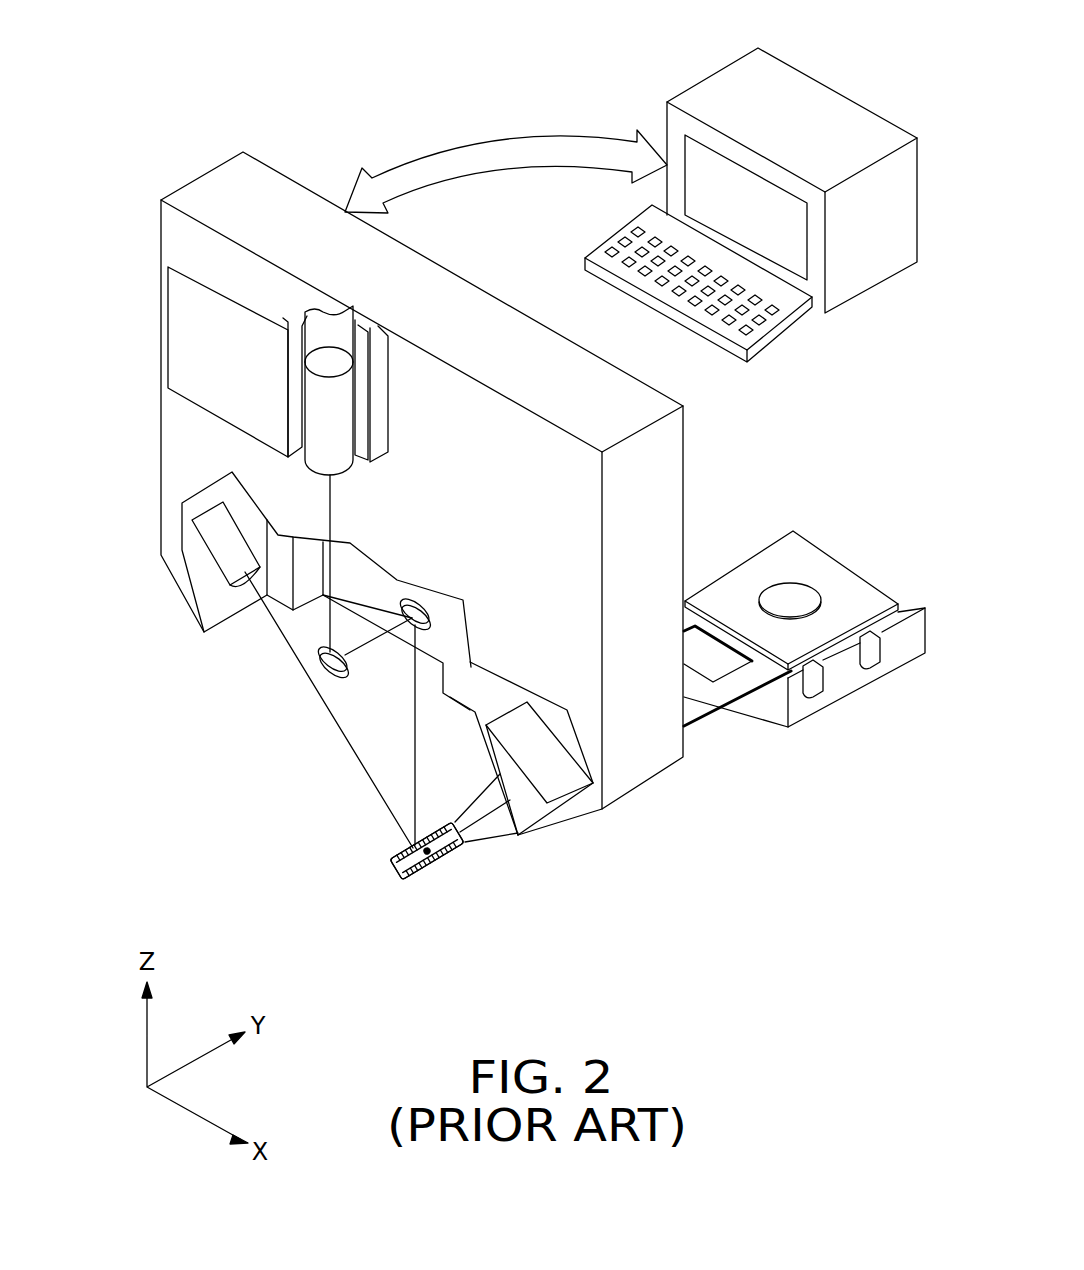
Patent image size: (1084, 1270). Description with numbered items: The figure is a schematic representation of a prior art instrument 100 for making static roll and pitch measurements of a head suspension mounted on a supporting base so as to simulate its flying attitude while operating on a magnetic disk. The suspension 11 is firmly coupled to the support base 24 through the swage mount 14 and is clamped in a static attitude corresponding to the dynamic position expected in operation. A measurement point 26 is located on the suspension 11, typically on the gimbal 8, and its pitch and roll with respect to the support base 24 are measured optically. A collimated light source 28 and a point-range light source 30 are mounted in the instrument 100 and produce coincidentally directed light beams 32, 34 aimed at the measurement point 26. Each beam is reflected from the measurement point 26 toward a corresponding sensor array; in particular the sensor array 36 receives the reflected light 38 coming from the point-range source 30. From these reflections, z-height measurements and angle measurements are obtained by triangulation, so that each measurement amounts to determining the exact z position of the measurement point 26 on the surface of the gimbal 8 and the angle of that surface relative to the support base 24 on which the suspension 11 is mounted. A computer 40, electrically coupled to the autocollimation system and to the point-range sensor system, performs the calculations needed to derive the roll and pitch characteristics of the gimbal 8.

The inspection system 100 is at (398, 132).
The gimbal 8 is at (440, 866).
The suspension 11 is at (703, 702).
The swage mount 14 is at (835, 582).
The support base 24 is at (852, 678).
The measurement point 26 is at (393, 866).
The collimated light source 28 is at (327, 418).
The point-range light source 30 is at (222, 548).
The light beam 32 is at (330, 500).
The light beam 34 is at (322, 704).
The sensor array 36 is at (552, 768).
The reflected light 38 is at (470, 818).
The computer 40 is at (848, 268).